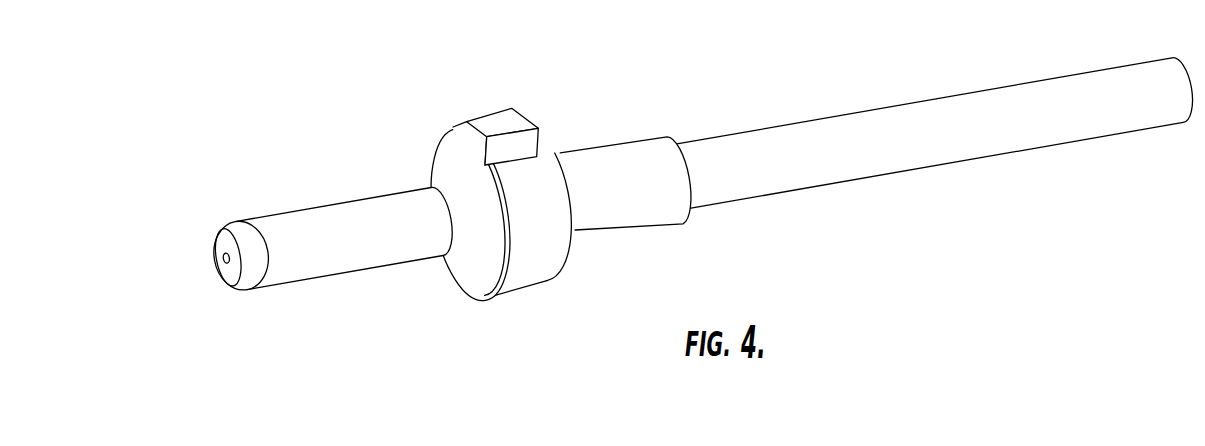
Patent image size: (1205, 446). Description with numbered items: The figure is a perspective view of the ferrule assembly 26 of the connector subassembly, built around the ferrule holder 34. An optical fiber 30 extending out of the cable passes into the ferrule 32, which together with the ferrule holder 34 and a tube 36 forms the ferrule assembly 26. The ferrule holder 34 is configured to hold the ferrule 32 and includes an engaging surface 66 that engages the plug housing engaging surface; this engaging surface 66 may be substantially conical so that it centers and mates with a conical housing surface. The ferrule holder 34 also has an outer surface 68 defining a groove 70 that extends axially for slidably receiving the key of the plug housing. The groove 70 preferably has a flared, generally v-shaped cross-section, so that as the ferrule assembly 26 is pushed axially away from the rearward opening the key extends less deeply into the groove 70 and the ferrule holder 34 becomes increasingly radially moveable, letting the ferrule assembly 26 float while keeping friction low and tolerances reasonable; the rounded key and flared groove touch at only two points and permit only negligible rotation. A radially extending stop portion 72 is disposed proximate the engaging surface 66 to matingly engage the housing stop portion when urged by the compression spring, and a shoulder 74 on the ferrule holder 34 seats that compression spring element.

The ferrule assembly 26 is at (654, 58).
The optical fiber 30 is at (221, 257).
The ferrule 32 is at (288, 215).
The ferrule holder 34 is at (517, 164).
The tube 36 is at (870, 110).
The engaging surface 66 is at (448, 168).
The outer surface 68 is at (512, 125).
The groove 70 is at (528, 143).
The stop portion 72 is at (542, 276).
The shoulder 74 is at (578, 239).